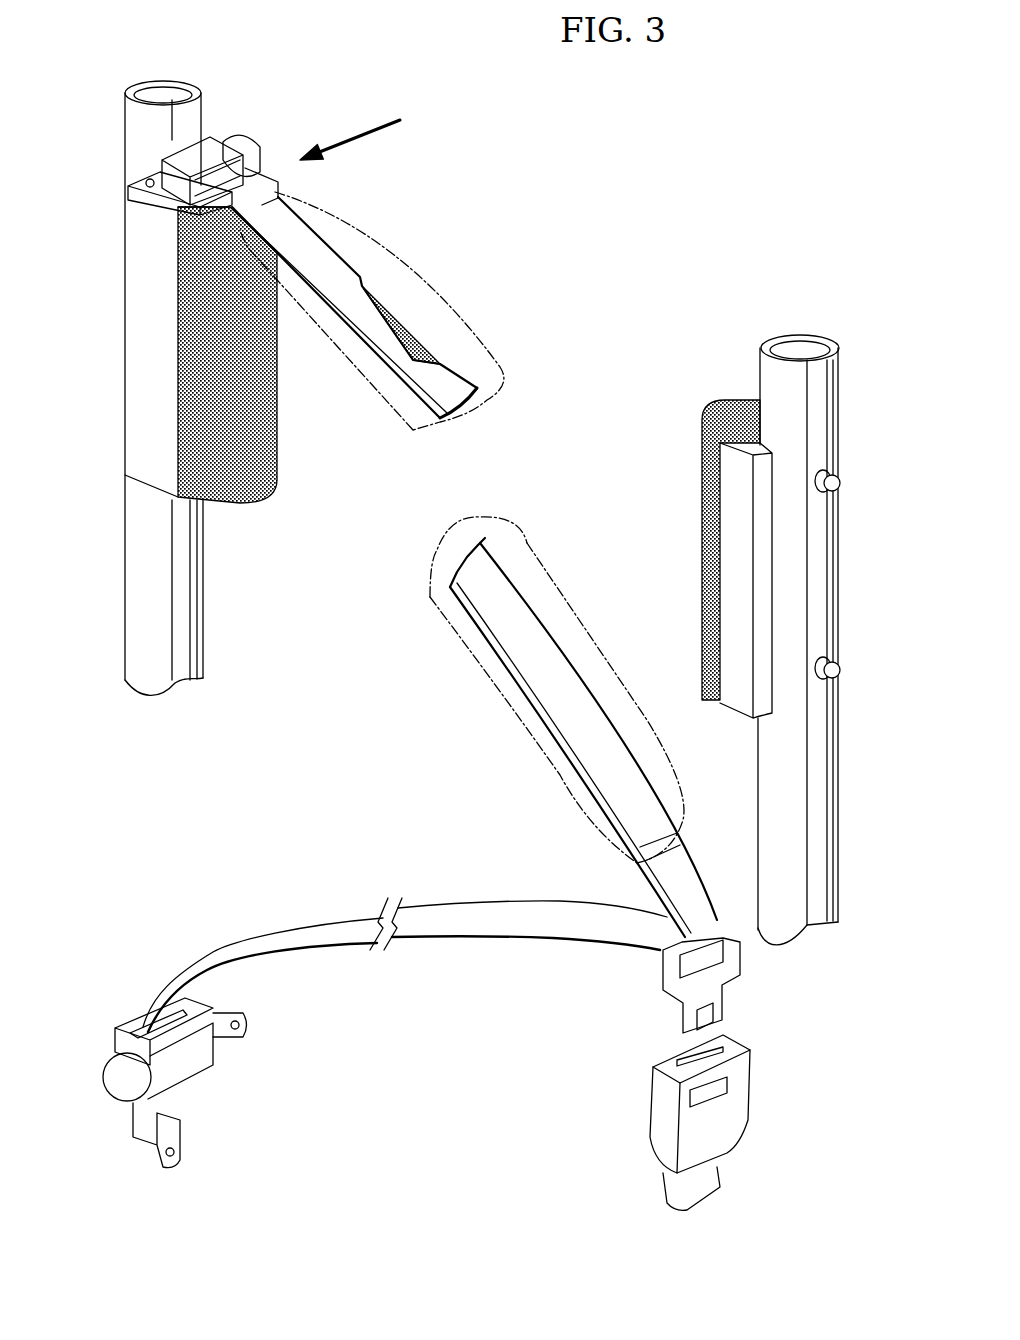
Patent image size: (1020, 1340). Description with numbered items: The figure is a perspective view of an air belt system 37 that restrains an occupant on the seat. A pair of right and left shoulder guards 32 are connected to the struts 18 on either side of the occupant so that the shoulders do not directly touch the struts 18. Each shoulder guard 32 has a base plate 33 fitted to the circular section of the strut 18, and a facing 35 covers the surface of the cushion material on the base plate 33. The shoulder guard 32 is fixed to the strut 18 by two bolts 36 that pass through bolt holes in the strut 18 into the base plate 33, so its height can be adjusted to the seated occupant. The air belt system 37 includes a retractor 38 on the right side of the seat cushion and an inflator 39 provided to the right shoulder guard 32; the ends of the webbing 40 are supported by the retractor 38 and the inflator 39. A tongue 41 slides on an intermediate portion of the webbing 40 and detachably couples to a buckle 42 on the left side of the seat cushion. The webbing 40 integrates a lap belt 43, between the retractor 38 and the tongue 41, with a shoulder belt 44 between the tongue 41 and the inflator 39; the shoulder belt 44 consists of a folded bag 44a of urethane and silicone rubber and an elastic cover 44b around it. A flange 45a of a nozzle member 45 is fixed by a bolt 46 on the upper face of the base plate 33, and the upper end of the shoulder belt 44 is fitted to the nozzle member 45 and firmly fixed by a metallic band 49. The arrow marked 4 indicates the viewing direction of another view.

The view direction of FIG. 4 is at (364, 134).
The strut 18 is at (182, 585).
The shoulder guard 32 is at (448, 462).
The base plate 33 is at (155, 470).
The facing 35 is at (270, 374).
The bolt 36 is at (832, 478).
The air belt system 37 is at (432, 697).
The retractor 38 is at (140, 997).
The inflator 39 is at (253, 161).
The webbing 40 is at (430, 612).
The tongue 41 is at (717, 973).
The buckle 42 is at (630, 1118).
The lap belt 43 is at (532, 898).
The shoulder belt 44 is at (474, 564).
The folded bag 44a is at (417, 347).
The elastic cover 44b is at (452, 380).
The nozzle member 45 is at (214, 138).
The flange 45a is at (131, 186).
The bolt 46 is at (157, 203).
The metallic band 49 is at (235, 147).